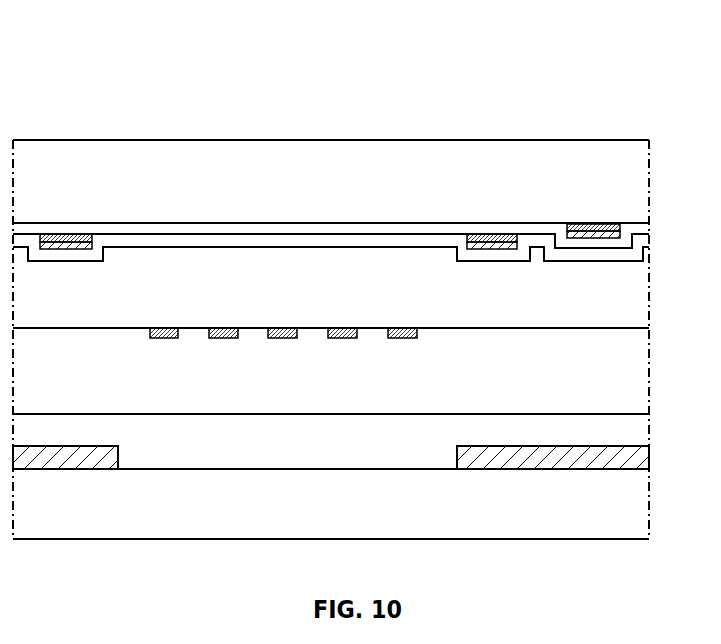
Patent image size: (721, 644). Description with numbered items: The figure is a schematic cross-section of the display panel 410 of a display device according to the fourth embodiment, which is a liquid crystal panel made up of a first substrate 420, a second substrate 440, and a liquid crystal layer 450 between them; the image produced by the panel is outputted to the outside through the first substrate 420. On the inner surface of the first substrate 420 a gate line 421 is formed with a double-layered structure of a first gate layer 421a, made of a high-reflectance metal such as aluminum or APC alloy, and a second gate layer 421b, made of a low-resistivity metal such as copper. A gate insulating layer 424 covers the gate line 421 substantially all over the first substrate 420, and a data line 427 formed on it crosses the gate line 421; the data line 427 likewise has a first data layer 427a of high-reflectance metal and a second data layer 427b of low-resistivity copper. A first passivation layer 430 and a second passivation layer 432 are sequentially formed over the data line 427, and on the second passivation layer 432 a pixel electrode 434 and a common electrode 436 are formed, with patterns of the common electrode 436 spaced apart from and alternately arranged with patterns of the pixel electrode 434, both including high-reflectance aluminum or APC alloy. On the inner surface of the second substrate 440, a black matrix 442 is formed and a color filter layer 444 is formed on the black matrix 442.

The display panel 410 is at (632, 104).
The first substrate 420 is at (638, 189).
The gate line 421 is at (566, 146).
The first gate layer 421a is at (577, 225).
The second gate layer 421b is at (598, 224).
The gate insulating layer 424 is at (196, 230).
The data line 427 is at (267, 149).
The first data layer 427a is at (55, 233).
The second data layer 427b is at (88, 233).
The first passivation layer 430 is at (254, 242).
The second passivation layer 432 is at (325, 262).
The pixel electrode 434 is at (225, 328).
The common electrode 436 is at (163, 328).
The second substrate 440 is at (638, 516).
The black matrix 442 is at (70, 462).
The color filter layer 444 is at (250, 456).
The liquid crystal layer 450 is at (630, 364).